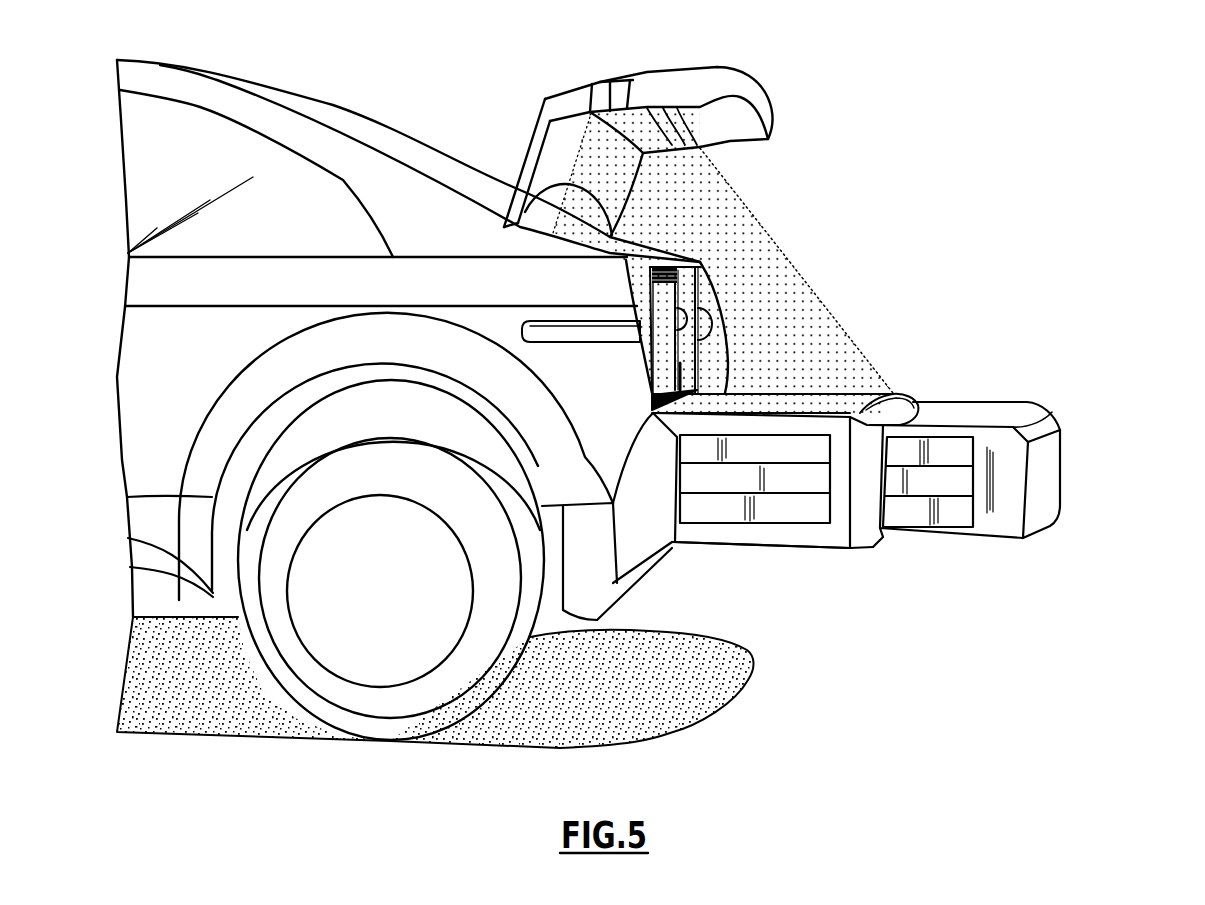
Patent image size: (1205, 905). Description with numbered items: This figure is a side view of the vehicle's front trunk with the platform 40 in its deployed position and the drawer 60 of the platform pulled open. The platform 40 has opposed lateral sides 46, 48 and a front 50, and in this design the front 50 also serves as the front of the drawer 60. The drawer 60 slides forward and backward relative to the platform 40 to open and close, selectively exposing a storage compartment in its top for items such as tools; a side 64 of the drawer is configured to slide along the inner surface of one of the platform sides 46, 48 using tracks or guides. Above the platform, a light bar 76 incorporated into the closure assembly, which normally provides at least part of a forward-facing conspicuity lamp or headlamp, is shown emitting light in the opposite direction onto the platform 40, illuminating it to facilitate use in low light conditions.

The platform 40 is at (888, 482).
The lateral side 46 is at (757, 533).
The lateral side 48 is at (901, 395).
The front 50 is at (1047, 492).
The drawer 60 is at (1005, 406).
The side 64 is at (1001, 508).
The light bar 76 is at (626, 81).